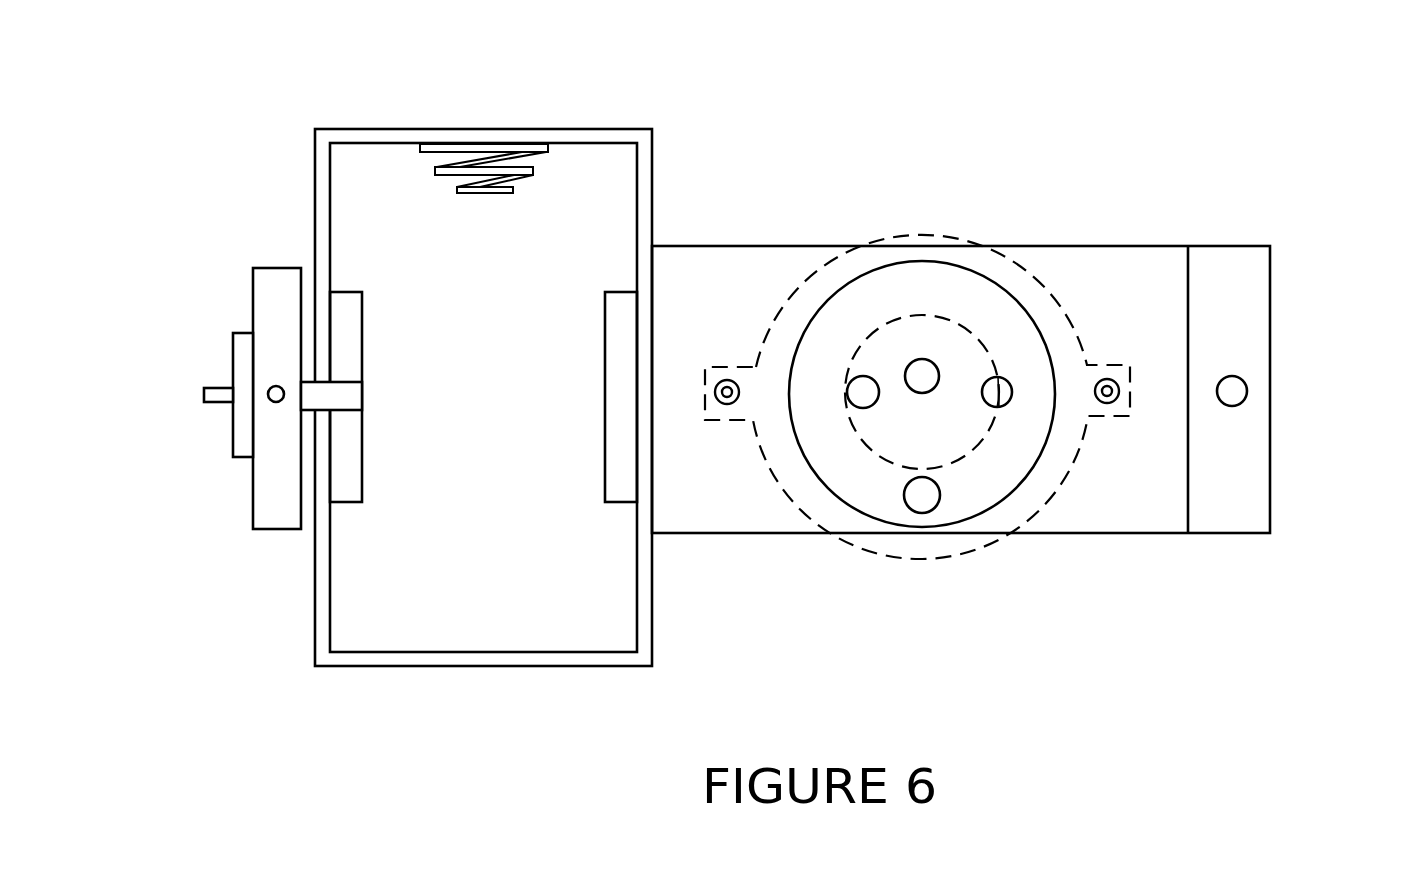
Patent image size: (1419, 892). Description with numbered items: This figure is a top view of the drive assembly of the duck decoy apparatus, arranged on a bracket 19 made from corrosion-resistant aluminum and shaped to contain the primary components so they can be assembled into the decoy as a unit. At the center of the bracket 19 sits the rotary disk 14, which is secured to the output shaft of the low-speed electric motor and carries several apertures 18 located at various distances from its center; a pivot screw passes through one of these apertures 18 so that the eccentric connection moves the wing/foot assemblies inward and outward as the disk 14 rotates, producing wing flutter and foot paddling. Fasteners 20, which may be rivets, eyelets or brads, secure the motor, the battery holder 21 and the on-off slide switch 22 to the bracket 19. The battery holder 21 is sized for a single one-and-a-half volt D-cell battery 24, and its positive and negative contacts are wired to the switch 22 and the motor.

The rotary disk 14 is at (972, 265).
The apertures 18 is at (863, 377).
The bracket 19 is at (1238, 295).
The fasteners 20 is at (722, 380).
The battery holder 21 is at (488, 132).
The on-off slide switch 22 is at (235, 352).
The D-cell battery 24 is at (1247, 386).